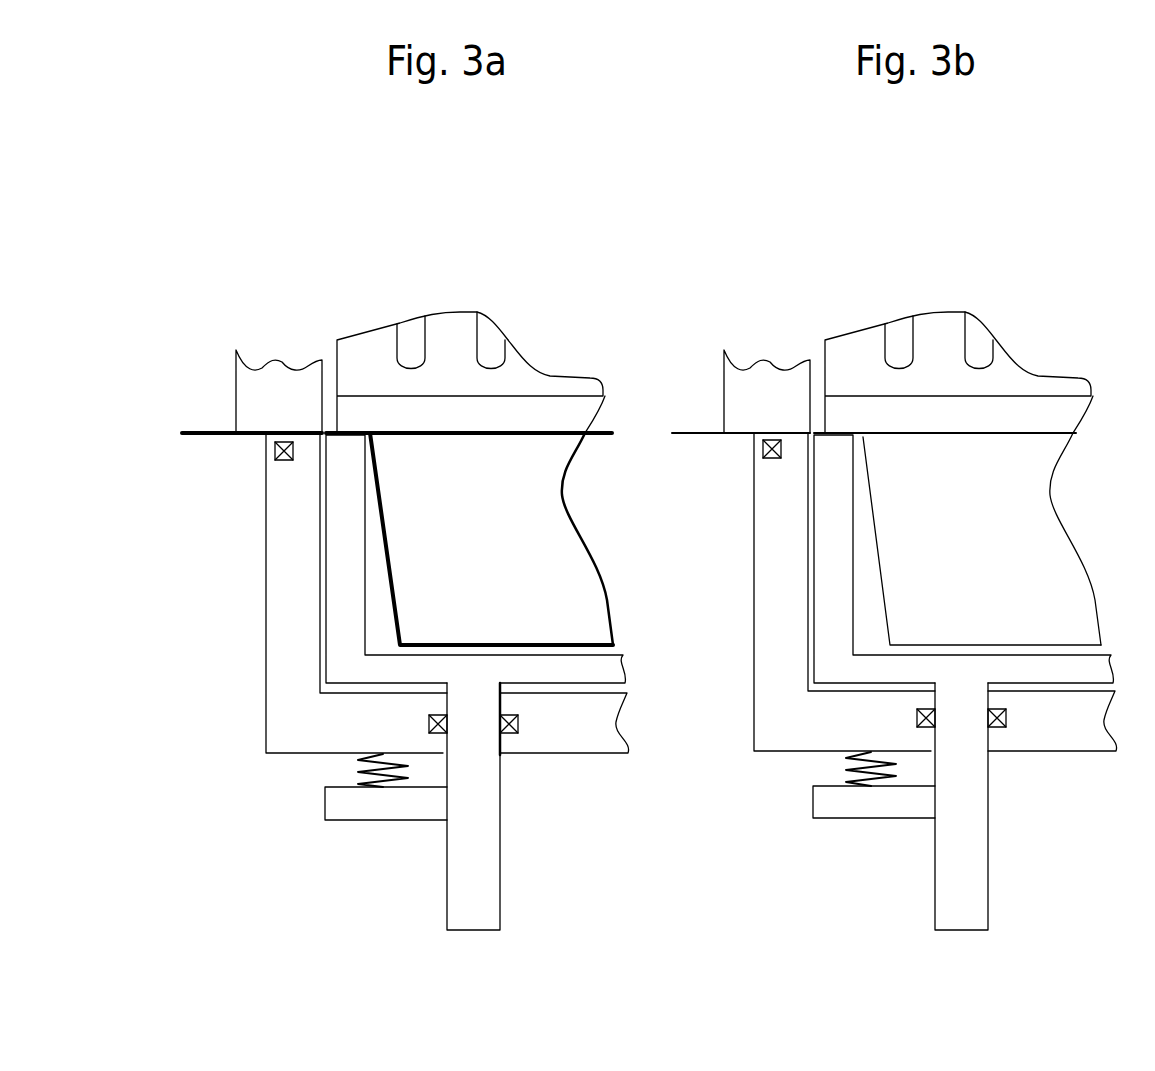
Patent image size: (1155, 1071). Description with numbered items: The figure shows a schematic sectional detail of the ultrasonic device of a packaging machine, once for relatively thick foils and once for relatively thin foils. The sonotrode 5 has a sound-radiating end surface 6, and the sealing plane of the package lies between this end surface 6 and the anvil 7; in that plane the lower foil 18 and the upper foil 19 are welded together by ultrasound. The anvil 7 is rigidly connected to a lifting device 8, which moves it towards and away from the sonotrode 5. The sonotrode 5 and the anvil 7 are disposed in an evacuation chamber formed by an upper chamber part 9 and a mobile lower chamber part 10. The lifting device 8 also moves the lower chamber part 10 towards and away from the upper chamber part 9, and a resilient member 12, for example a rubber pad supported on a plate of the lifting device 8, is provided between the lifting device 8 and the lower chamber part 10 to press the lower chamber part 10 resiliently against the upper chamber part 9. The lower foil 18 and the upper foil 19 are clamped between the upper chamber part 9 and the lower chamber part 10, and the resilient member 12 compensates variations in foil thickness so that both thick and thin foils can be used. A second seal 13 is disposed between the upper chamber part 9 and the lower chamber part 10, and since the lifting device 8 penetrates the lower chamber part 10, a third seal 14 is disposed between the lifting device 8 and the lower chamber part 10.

The sonotrode 5 is at (448, 347).
The sound-radiating end surface 6 is at (557, 427).
The anvil 7 is at (350, 568).
The lifting device 8 is at (457, 831).
The upper chamber part 9 is at (267, 368).
The mobile lower chamber part 10 is at (290, 590).
The resilient member 12 is at (355, 771).
The second seal 13 is at (256, 431).
The third seal 14 is at (429, 728).
The lower foil 18 is at (453, 583).
The upper foil 19 is at (495, 433).